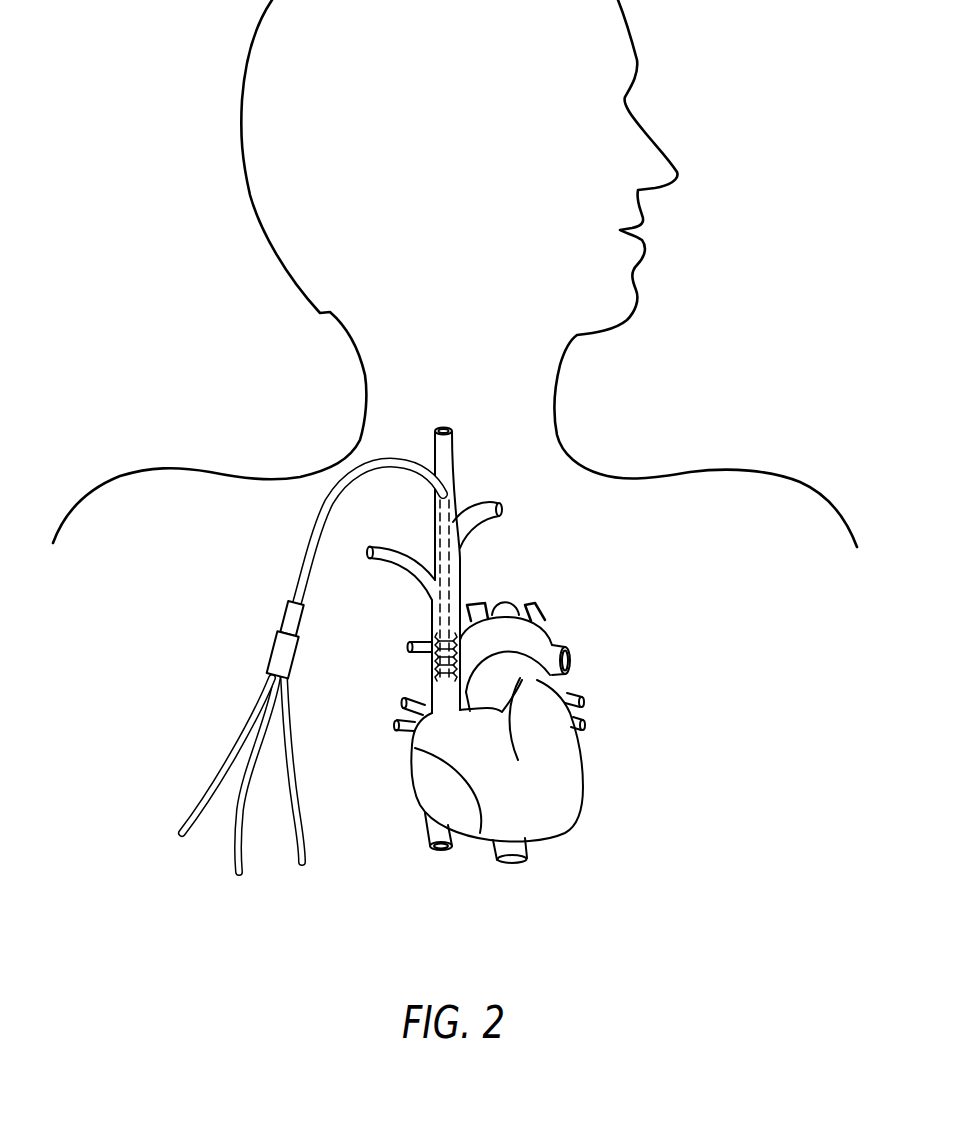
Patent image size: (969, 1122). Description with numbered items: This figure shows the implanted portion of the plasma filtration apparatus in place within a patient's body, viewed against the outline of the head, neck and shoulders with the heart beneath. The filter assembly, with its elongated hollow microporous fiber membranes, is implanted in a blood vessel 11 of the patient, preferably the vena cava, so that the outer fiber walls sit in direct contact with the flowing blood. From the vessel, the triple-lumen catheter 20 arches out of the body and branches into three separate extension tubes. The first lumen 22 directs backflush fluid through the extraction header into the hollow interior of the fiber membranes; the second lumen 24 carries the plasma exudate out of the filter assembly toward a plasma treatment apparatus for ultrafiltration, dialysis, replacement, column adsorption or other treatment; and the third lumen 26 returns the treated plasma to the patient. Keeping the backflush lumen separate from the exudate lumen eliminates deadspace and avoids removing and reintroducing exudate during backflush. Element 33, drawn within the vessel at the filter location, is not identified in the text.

The blood vessel 11 is at (460, 588).
The triple-lumen catheter 20 is at (302, 571).
The first lumen 22 is at (205, 803).
The second lumen 24 is at (235, 855).
The third lumen 26 is at (295, 825).
The expandable portion of catheter 33 is at (435, 662).